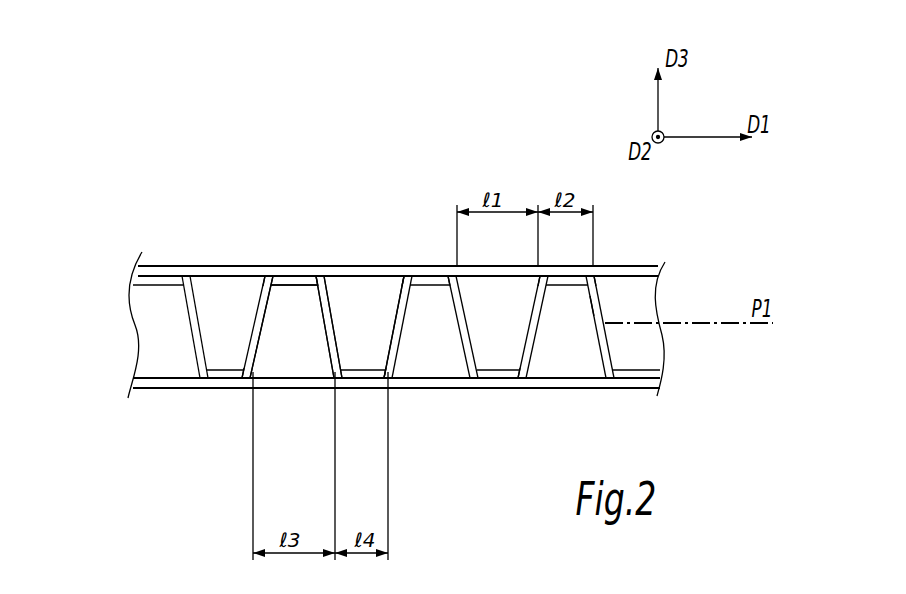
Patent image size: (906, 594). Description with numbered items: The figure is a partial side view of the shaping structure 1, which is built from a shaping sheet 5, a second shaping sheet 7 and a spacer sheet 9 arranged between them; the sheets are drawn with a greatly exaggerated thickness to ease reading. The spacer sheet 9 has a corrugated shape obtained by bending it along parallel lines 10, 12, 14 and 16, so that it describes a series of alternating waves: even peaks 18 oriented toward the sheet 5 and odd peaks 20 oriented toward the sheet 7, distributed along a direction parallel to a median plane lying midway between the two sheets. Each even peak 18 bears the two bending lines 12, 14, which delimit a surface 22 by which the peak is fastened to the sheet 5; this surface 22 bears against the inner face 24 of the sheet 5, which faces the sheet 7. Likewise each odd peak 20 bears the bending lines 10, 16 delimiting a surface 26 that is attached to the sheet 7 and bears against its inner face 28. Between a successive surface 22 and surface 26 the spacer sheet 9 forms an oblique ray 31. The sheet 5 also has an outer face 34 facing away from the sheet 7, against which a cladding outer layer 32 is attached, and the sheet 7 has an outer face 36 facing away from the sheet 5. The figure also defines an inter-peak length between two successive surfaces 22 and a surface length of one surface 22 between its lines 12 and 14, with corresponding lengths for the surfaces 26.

The shaping structure 1 is at (394, 279).
The shaping sheet 5 is at (405, 269).
The shaping sheet 7 is at (375, 421).
The spacer sheet 9 is at (400, 290).
The bending line 10 is at (245, 378).
The bending line 12 is at (272, 268).
The bending line 14 is at (322, 275).
The bending line 16 is at (333, 372).
The even peak 18 is at (219, 268).
The odd peak 20 is at (252, 344).
The surface 22 is at (303, 268).
The inner face 24 is at (215, 276).
The surface 26 is at (364, 388).
The inner face 28 is at (155, 377).
The ray 31 is at (330, 322).
The outer layer 32 is at (270, 298).
The outer face 34 is at (649, 266).
The outer face 36 is at (650, 389).